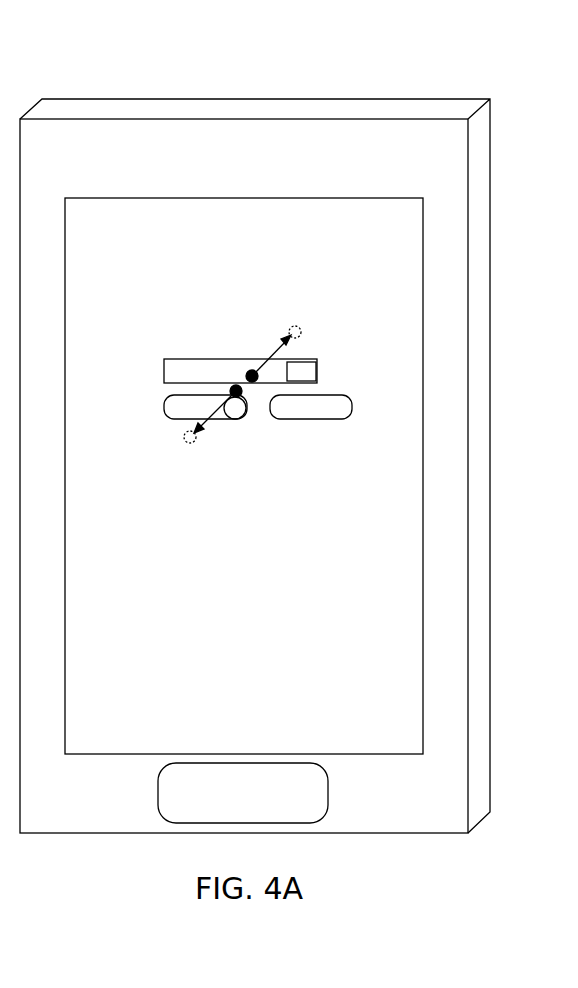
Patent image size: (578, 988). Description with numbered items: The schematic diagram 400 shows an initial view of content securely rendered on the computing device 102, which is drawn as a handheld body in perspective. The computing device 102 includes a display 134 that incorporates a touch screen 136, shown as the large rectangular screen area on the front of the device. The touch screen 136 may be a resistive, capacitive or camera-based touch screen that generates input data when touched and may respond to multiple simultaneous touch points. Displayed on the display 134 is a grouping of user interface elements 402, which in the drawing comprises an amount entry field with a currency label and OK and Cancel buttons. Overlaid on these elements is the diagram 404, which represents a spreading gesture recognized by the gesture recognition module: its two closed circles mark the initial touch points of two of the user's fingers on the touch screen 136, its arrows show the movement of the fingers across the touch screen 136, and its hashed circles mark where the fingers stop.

The schematic diagram 400 is at (289, 430).
The computing device 102 is at (311, 100).
The display 134 is at (312, 476).
The touch screen 136 is at (423, 261).
The grouping of user interface elements 402 is at (231, 366).
The diagram of spreading gesture 404 is at (232, 418).